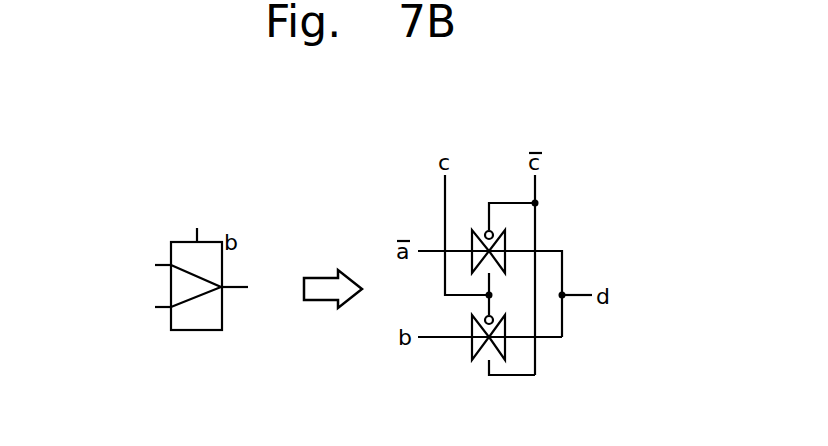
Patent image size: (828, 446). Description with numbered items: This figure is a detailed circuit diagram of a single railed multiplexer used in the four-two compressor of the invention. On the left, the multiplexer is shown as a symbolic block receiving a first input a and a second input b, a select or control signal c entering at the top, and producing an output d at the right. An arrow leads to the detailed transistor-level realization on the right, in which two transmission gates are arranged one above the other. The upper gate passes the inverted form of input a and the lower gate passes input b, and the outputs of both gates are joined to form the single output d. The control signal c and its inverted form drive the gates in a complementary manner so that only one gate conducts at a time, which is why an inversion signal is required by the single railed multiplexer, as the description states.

The input signal a is at (153, 265).
The input signal b is at (153, 306).
The control signal c is at (196, 223).
The output signal d is at (245, 288).